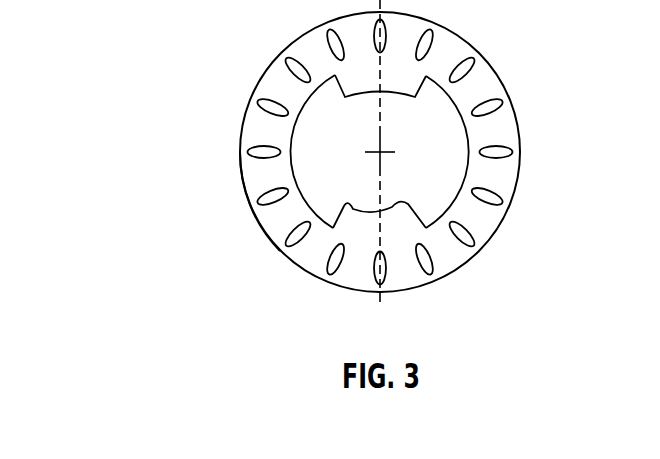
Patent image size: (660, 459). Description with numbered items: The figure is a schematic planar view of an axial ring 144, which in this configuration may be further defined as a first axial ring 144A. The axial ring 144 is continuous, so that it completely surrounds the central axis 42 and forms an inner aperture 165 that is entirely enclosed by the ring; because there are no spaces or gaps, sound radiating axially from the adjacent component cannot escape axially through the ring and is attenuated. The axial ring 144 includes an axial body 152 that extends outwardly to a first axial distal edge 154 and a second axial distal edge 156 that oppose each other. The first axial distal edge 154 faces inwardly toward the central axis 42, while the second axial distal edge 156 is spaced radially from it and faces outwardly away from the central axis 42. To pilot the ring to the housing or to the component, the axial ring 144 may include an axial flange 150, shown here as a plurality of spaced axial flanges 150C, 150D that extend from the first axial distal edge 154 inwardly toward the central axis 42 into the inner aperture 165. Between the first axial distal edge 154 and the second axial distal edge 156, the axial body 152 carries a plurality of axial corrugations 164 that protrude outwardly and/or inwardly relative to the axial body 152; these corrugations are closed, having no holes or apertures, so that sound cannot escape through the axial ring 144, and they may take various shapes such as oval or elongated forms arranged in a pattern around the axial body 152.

The central axis 42 is at (382, 144).
The axial ring 144 is at (367, 181).
The first axial ring 144A is at (367, 181).
The axial flange 150 is at (487, 64).
The axial flange 150C is at (430, 78).
The axial flange 150D is at (386, 208).
The axial body 152 is at (456, 262).
The first axial distal edge 154 is at (397, 190).
The second axial distal edge 156 is at (243, 180).
The axial corrugations 164 is at (377, 257).
The inner aperture 165 is at (357, 192).